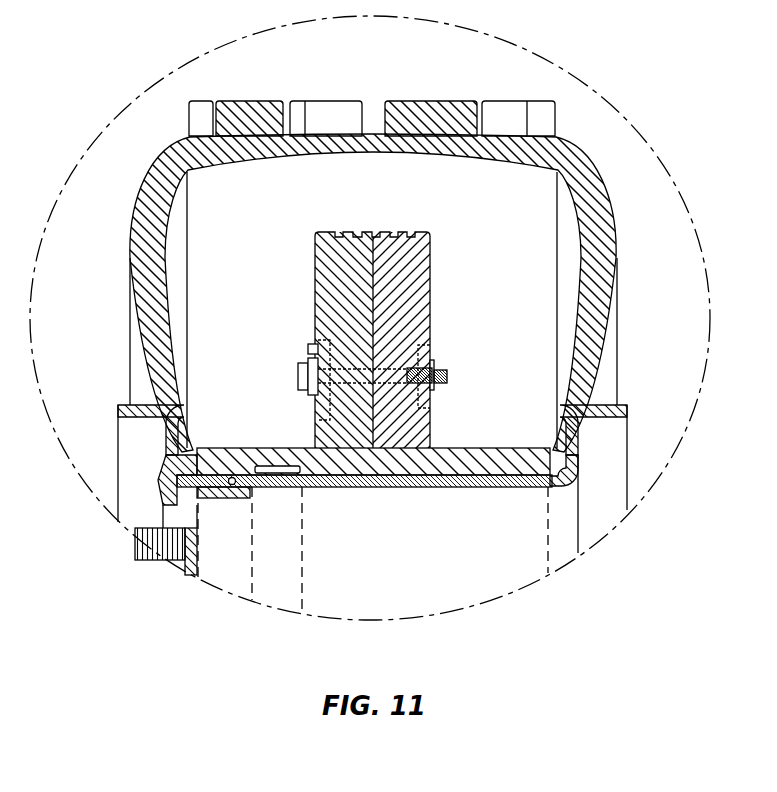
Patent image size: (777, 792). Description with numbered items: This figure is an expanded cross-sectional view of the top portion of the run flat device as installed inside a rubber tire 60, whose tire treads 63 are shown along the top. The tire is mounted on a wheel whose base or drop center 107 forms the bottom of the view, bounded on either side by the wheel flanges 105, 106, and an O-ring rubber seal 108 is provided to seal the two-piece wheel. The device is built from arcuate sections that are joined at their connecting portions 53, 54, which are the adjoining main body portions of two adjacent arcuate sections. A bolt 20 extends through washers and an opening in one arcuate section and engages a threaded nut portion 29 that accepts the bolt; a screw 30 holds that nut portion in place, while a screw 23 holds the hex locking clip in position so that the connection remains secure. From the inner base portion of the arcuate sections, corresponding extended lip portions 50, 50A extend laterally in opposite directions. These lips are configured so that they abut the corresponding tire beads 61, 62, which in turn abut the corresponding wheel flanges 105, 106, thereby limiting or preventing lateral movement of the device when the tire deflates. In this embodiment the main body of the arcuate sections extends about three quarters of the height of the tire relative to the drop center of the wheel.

The bolt 20 is at (305, 372).
The screw 23 is at (322, 338).
The threaded nut portion 29 is at (437, 395).
The screw 30 is at (443, 362).
The extended lip portion 50 is at (262, 448).
The extended lip portion 50A is at (493, 456).
The connecting portion 53 is at (320, 253).
The connecting portion 54 is at (423, 258).
The rubber tire 60 is at (614, 262).
The tire bead 61 is at (182, 455).
The tire bead 62 is at (555, 455).
The tire treads 63 is at (462, 110).
The wheel flange 105 is at (128, 405).
The wheel flange 106 is at (628, 410).
The drop center 107 is at (438, 487).
The O-ring rubber seal 108 is at (232, 487).